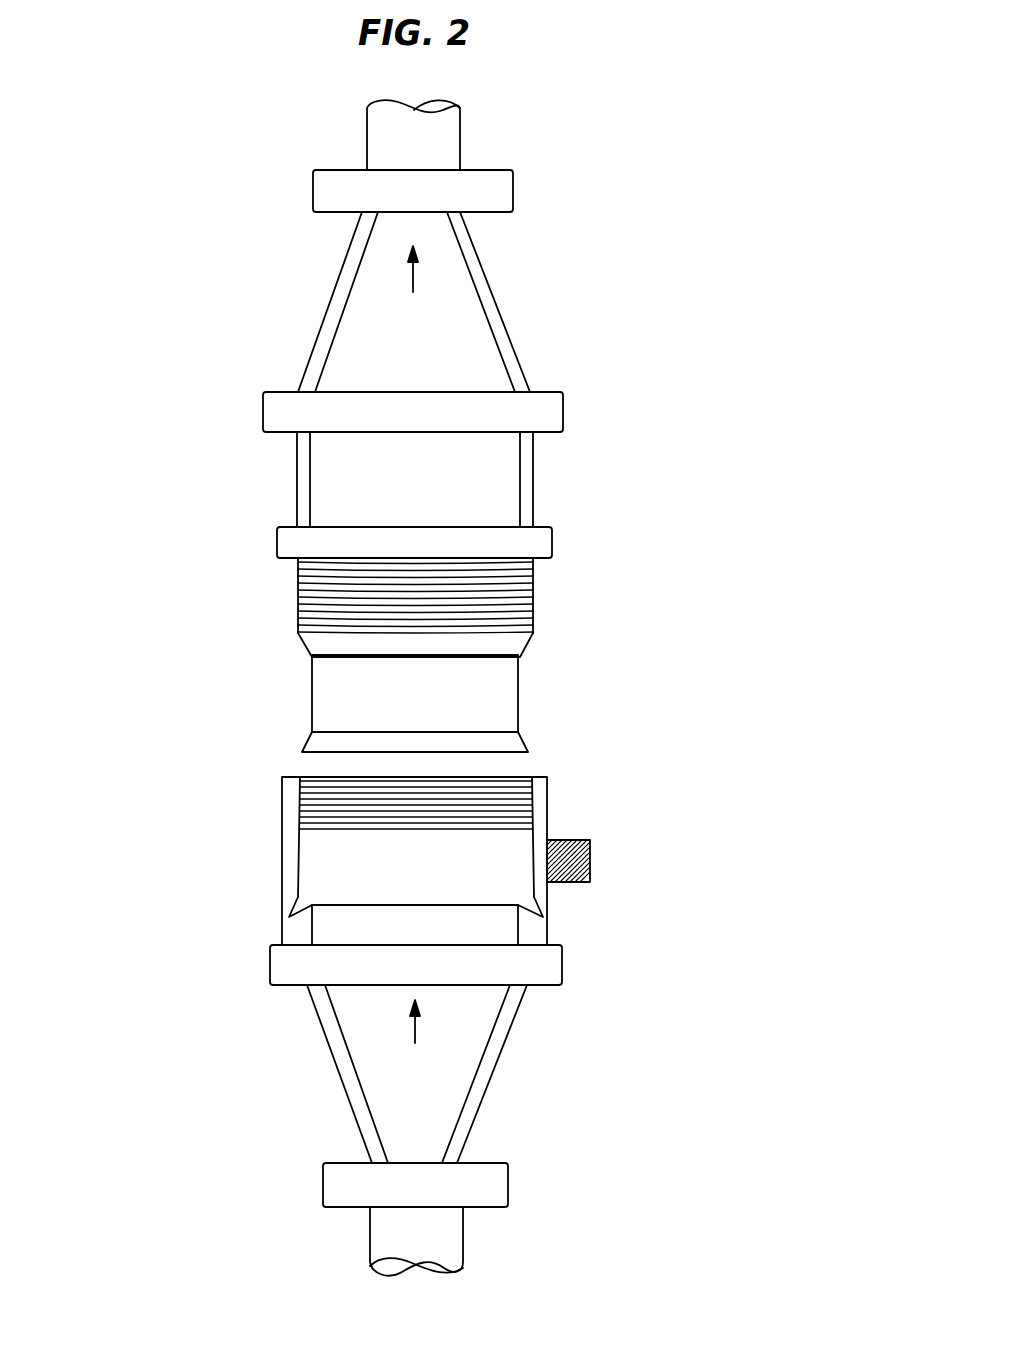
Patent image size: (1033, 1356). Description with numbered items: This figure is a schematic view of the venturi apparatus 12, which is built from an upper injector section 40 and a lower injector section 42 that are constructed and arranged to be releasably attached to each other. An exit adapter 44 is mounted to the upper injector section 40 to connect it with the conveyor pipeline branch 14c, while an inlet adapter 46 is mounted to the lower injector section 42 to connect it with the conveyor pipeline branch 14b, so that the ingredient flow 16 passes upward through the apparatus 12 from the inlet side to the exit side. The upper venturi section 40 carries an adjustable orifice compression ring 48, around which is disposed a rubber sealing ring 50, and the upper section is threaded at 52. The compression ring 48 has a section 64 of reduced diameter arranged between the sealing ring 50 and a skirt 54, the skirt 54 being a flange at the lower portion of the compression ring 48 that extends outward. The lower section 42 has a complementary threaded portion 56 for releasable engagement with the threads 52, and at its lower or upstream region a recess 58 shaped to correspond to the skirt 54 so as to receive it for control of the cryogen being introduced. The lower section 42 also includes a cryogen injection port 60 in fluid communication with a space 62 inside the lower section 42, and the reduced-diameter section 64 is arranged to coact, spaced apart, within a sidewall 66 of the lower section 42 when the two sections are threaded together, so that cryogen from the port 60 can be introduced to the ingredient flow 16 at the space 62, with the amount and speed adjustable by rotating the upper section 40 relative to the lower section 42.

The apparatus 12 is at (637, 183).
The conveyor pipeline branch 14b is at (463, 1237).
The conveyor pipeline branch 14c is at (460, 145).
The ingredient flow 16 is at (413, 272).
The upper injector section 40 is at (296, 466).
The lower injector section 42 is at (280, 828).
The exit adapter 44 is at (486, 282).
The inlet adapter 46 is at (512, 1028).
The adjustable orifice compression ring 48 is at (552, 534).
The rubber sealing ring 50 is at (298, 603).
The threads 52 is at (533, 642).
The skirt 54 is at (528, 750).
The threaded portion 56 is at (495, 790).
The recess 58 is at (286, 899).
The cryogen injection port 60 is at (604, 862).
The space 62 is at (427, 877).
The section with reduced diameter 64 is at (310, 694).
The sidewall 66 is at (280, 792).